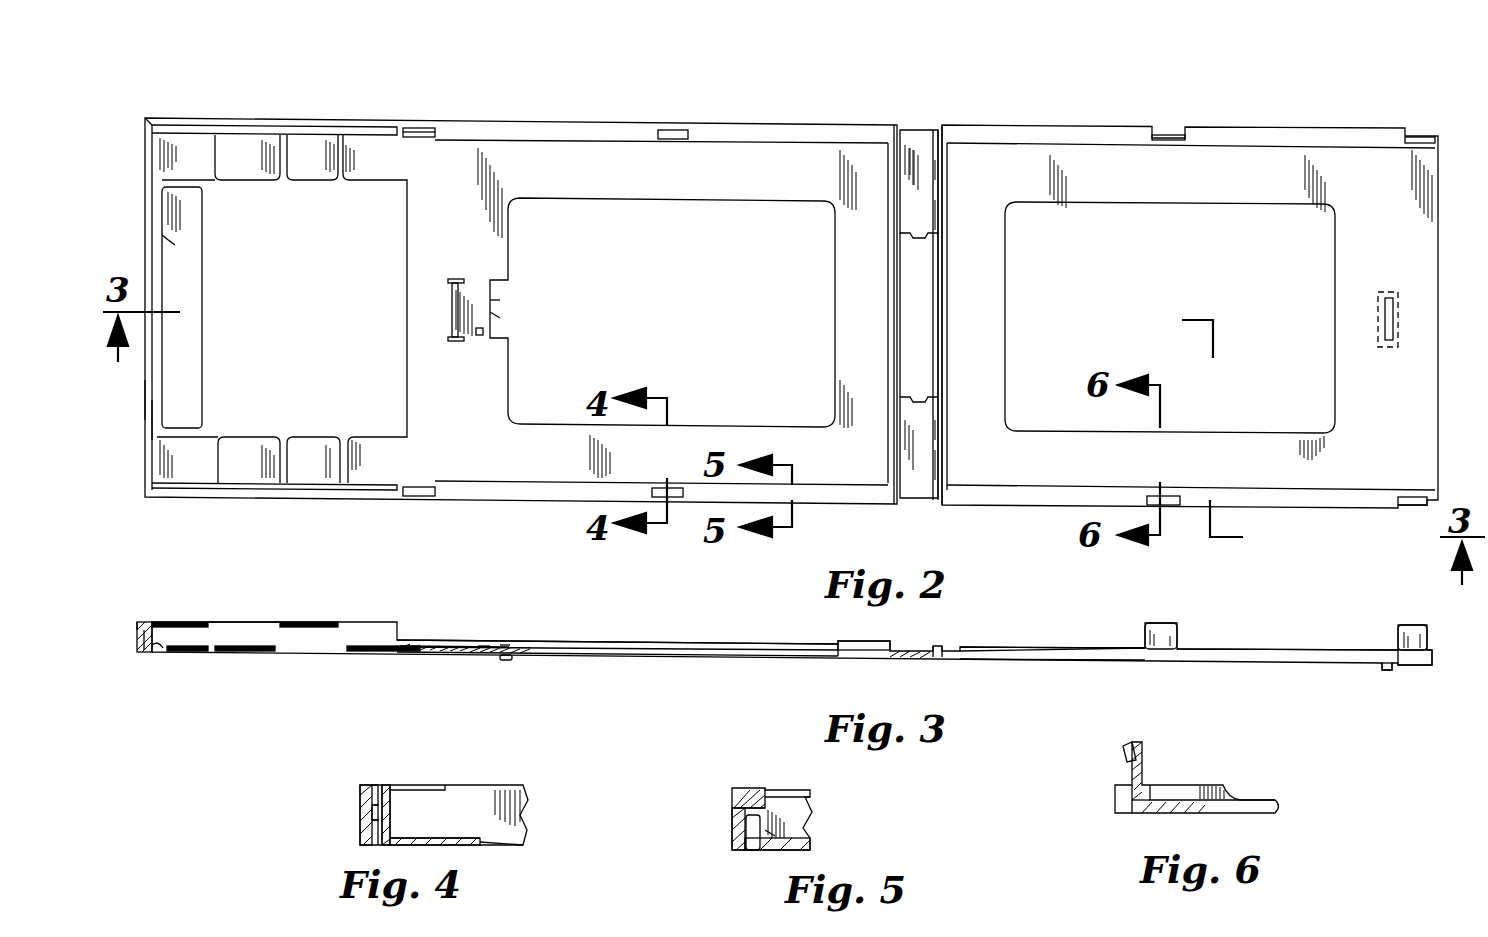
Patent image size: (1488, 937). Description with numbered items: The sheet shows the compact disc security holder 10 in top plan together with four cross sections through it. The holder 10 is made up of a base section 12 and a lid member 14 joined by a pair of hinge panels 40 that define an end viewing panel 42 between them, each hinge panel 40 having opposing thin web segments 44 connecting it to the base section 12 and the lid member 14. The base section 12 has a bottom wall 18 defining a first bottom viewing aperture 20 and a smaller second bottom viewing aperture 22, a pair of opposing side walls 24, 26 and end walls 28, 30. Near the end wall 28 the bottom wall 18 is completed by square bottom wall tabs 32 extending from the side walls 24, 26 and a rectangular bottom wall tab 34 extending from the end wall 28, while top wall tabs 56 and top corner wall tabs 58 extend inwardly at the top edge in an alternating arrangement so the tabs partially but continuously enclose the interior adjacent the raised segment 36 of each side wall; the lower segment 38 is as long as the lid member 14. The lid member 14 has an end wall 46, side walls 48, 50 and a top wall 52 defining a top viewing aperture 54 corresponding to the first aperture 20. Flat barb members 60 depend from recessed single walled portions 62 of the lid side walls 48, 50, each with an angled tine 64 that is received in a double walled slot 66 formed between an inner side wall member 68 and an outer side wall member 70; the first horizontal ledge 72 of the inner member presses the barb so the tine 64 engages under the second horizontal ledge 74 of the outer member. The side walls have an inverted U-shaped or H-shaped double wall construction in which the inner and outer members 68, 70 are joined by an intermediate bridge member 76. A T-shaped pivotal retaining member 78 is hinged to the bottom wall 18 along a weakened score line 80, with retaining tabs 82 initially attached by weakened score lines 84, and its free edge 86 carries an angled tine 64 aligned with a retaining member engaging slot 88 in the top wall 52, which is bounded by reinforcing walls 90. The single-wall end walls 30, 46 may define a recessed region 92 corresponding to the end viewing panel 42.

In FIG. 2, the compact disc security holder 10 is at (222, 100).
In FIG. 3, the compact disc security holder 10 is at (177, 590).
In FIG. 2, the base section 12 is at (602, 110).
In FIG. 3, the base section 12 is at (638, 668).
In FIG. 4, the base section 12 is at (534, 782).
In FIG. 5, the base section 12 is at (782, 778).
In FIG. 2, the lid member 14 is at (964, 100).
In FIG. 3, the lid member 14 is at (1305, 676).
In FIG. 6, the lid member 14 is at (1182, 776).
In FIG. 2, the bottom wall 18 is at (466, 402).
In FIG. 3, the bottom wall 18 is at (806, 642).
In FIG. 4, the bottom wall 18 is at (512, 846).
In FIG. 5, the bottom wall 18 is at (792, 850).
In FIG. 2, the first bottom viewing aperture 20 is at (536, 204).
In FIG. 3, the first bottom viewing aperture 20 is at (530, 648).
In FIG. 4, the first bottom viewing aperture 20 is at (482, 845).
In FIG. 2, the second bottom viewing aperture 22 is at (407, 358).
In FIG. 3, the second bottom viewing aperture 22 is at (402, 652).
In FIG. 2, the side wall 24 is at (462, 500).
In FIG. 4, the side wall 24 is at (360, 804).
In FIG. 5, the side wall 24 is at (732, 818).
In FIG. 2, the side wall 26 is at (520, 124).
In FIG. 3, the side wall 26 is at (430, 640).
In FIG. 2, the end wall 28 is at (147, 126).
In FIG. 3, the end wall 28 is at (137, 640).
In FIG. 4, the end wall 28 is at (480, 785).
In FIG. 5, the end wall 28 is at (812, 806).
In FIG. 2, the end wall 30 is at (880, 136).
In FIG. 3, the end wall 30 is at (880, 641).
In FIG. 2, the square bottom wall tab 32 is at (264, 176).
In FIG. 3, the square bottom wall tab 32 is at (248, 652).
In FIG. 2, the rectangular bottom wall tab 34 is at (202, 352).
In FIG. 3, the rectangular bottom wall tab 34 is at (186, 652).
In FIG. 2, the raised segment 36 is at (360, 128).
In FIG. 3, the raised segment 36 is at (252, 622).
In FIG. 5, the raised segment 36 is at (740, 788).
In FIG. 2, the lower segment 38 is at (776, 124).
In FIG. 3, the lower segment 38 is at (645, 642).
In FIG. 4, the lower segment 38 is at (366, 785).
In FIG. 5, the lower segment 38 is at (736, 806).
In FIG. 2, the hinge panel 40 is at (924, 192).
In FIG. 3, the hinge panel 40 is at (908, 658).
In FIG. 2, the end viewing panel 42 is at (938, 290).
In FIG. 2, the thin web segment 44 is at (940, 212).
In FIG. 3, the thin web segment 44 is at (935, 650).
In FIG. 2, the end wall 46 is at (945, 172).
In FIG. 3, the end wall 46 is at (944, 646).
In FIG. 6, the end wall 46 is at (1205, 785).
In FIG. 2, the side wall 48 is at (1236, 126).
In FIG. 3, the side wall 48 is at (1044, 650).
In FIG. 2, the side wall 50 is at (1022, 506).
In FIG. 6, the side wall 50 is at (1115, 798).
In FIG. 2, the top wall 52 is at (1392, 242).
In FIG. 3, the top wall 52 is at (960, 648).
In FIG. 6, the top wall 52 is at (1176, 812).
In FIG. 2, the top viewing aperture 54 is at (1266, 204).
In FIG. 3, the top viewing aperture 54 is at (1010, 661).
In FIG. 2, the top wall tab 56 is at (312, 176).
In FIG. 3, the top wall tab 56 is at (312, 622).
In FIG. 5, the top wall tab 56 is at (792, 790).
In FIG. 2, the top corner wall tab 58 is at (212, 178).
In FIG. 3, the top corner wall tab 58 is at (190, 622).
In FIG. 2, the flat barb member 60 is at (1420, 136).
In FIG. 3, the flat barb member 60 is at (1177, 634).
In FIG. 6, the flat barb member 60 is at (1144, 760).
In FIG. 3, the recessed and single walled portion 62 is at (1412, 666).
In FIG. 6, the recessed and single walled portion 62 is at (1134, 808).
In FIG. 2, the angled tine 64 is at (1168, 134).
In FIG. 3, the angled tine 64 is at (506, 660).
In FIG. 6, the angled tine 64 is at (1124, 750).
In FIG. 2, the double walled slot 66 is at (418, 128).
In FIG. 4, the double walled slot 66 is at (380, 785).
In FIG. 2, the inner side wall member 68 is at (170, 250).
In FIG. 3, the inner side wall member 68 is at (158, 652).
In FIG. 4, the inner side wall member 68 is at (398, 832).
In FIG. 5, the inner side wall member 68 is at (808, 828).
In FIG. 2, the outer side wall member 70 is at (145, 392).
In FIG. 3, the outer side wall member 70 is at (140, 622).
In FIG. 4, the first horizontal ledge 72 is at (396, 806).
In FIG. 4, the second horizontal ledge 74 is at (372, 814).
In FIG. 2, the intermediate bridge member 76 is at (152, 412).
In FIG. 3, the intermediate bridge member 76 is at (146, 622).
In FIG. 5, the intermediate bridge member 76 is at (756, 850).
In FIG. 2, the pivotal retaining member 78 is at (490, 318).
In FIG. 3, the pivotal retaining member 78 is at (480, 644).
In FIG. 2, the weakened score line 80 is at (452, 316).
In FIG. 3, the weakened score line 80 is at (452, 654).
In FIG. 2, the retaining tab 82 is at (488, 288).
In FIG. 2, the weakened score line 84 is at (466, 279).
In FIG. 2, the free edge 86 is at (500, 306).
In FIG. 3, the free edge 86 is at (505, 644).
In FIG. 2, the retaining member engaging slot 88 is at (1395, 332).
In FIG. 2, the reinforcing wall 90 is at (1400, 305).
In FIG. 3, the reinforcing wall 90 is at (1386, 670).
In FIG. 2, the recessed region 92 is at (942, 322).
In FIG. 6, the recessed region 92 is at (1248, 800).